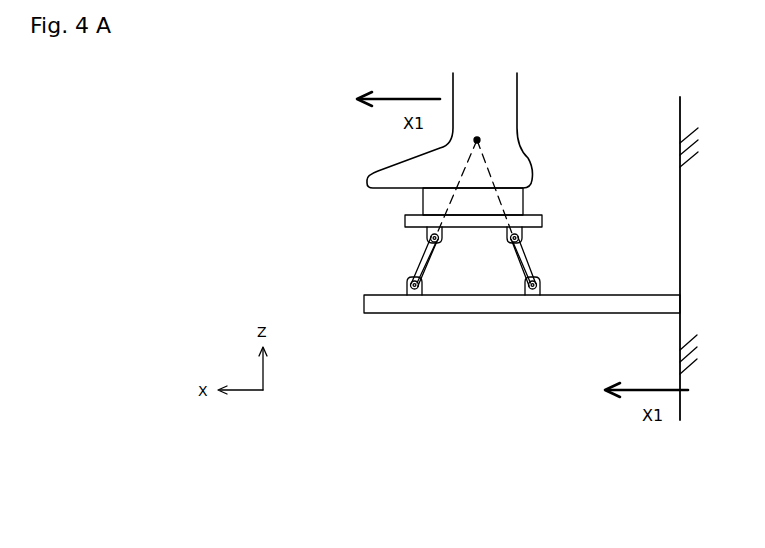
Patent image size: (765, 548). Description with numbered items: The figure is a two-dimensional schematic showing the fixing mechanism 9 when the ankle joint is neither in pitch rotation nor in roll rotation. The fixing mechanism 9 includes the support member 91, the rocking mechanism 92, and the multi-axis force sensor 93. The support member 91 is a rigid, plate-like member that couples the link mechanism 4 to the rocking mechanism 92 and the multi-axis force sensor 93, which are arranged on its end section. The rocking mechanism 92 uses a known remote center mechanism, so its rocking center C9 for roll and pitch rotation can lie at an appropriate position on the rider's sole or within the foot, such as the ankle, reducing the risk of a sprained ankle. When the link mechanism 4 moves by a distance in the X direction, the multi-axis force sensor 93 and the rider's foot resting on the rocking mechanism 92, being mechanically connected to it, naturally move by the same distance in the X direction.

The link mechanism 4 is at (685, 178).
The fixing mechanism 9 is at (478, 274).
The support member 91 is at (465, 307).
The rocking mechanism 92 is at (558, 222).
The multi-axis force sensor 93 is at (517, 204).
The rocking center C9 is at (477, 140).